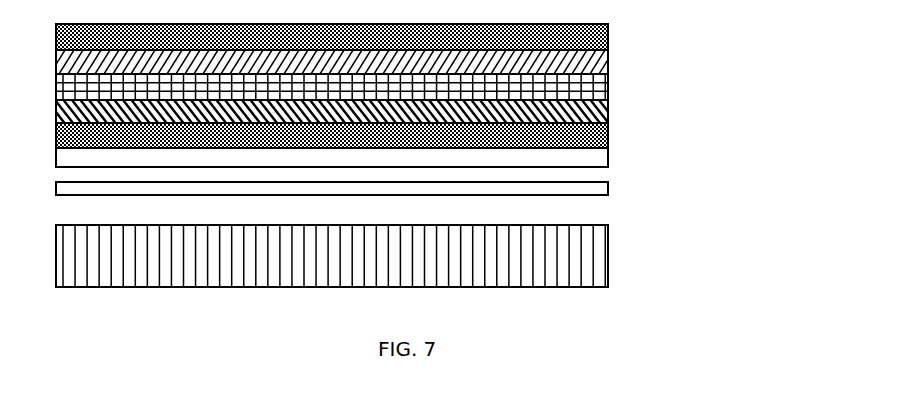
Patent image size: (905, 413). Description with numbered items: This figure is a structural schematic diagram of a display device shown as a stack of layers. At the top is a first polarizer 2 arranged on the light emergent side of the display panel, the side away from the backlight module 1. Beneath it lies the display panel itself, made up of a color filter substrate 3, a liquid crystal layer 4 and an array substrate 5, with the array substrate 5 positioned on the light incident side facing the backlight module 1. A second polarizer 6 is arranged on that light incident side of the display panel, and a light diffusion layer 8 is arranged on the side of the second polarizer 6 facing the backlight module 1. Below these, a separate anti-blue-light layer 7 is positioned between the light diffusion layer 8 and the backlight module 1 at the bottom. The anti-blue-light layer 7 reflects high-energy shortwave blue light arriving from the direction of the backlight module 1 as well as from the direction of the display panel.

The backlight module 1 is at (523, 262).
The first polarizer 2 is at (510, 37).
The color filter substrate 3 is at (510, 62).
The liquid crystal layer 4 is at (510, 87).
The array substrate 5 is at (510, 110).
The second polarizer 6 is at (510, 137).
The anti-blue-light layer 7 is at (510, 187).
The light diffusion layer 8 is at (510, 154).